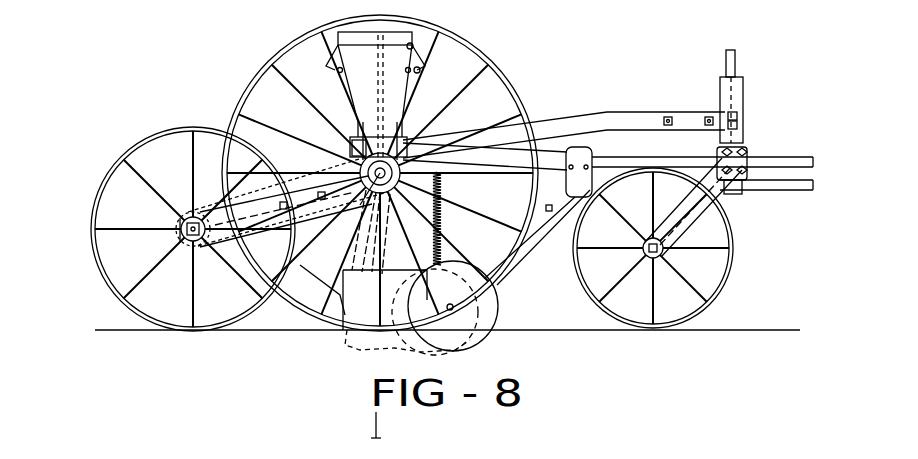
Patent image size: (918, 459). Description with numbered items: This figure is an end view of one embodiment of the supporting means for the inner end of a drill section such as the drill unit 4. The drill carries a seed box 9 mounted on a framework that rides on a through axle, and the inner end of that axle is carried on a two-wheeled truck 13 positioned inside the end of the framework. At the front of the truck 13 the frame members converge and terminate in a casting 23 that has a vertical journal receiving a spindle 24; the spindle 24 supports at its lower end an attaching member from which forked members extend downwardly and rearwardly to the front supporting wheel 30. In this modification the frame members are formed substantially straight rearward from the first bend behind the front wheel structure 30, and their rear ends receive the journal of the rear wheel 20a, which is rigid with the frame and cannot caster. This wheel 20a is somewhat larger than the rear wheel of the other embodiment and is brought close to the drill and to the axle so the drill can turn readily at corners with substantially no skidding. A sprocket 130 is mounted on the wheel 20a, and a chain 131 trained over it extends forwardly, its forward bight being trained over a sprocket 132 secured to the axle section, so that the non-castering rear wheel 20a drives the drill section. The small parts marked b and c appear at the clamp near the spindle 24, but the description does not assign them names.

The drill unit 4 is at (299, 24).
The seed box 9 is at (406, 46).
The truck 13 is at (615, 103).
The rear wheel 20a is at (114, 167).
The sprocket 130 is at (204, 207).
The chain 131 is at (322, 172).
The sprocket 132 is at (349, 152).
The casting 23 is at (721, 94).
The spindle 24 is at (736, 62).
The clamp bolt b is at (745, 118).
The clamp bolt c is at (745, 126).
The supporting wheel 30 is at (733, 277).